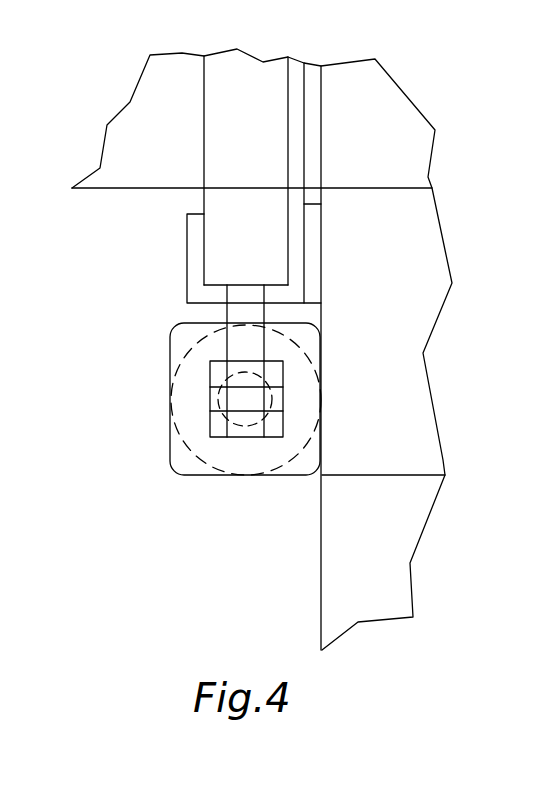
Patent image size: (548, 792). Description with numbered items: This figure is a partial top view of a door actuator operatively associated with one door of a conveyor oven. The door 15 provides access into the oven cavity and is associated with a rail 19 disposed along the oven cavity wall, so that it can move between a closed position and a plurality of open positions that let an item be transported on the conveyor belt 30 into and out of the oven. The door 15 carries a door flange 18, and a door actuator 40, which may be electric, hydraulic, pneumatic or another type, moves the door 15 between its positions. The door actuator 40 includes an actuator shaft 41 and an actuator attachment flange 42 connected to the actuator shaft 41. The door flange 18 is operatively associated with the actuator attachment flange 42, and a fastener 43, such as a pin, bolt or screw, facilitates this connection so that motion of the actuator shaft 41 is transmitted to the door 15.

The door 15 is at (240, 67).
The door flange 18 is at (243, 315).
The rail 19 is at (297, 265).
The conveyor belt 30 is at (130, 127).
The door actuator 40 is at (150, 387).
The actuator shaft 41 is at (246, 428).
The actuator attachment flange 42 is at (208, 362).
The fastener 43 is at (273, 383).